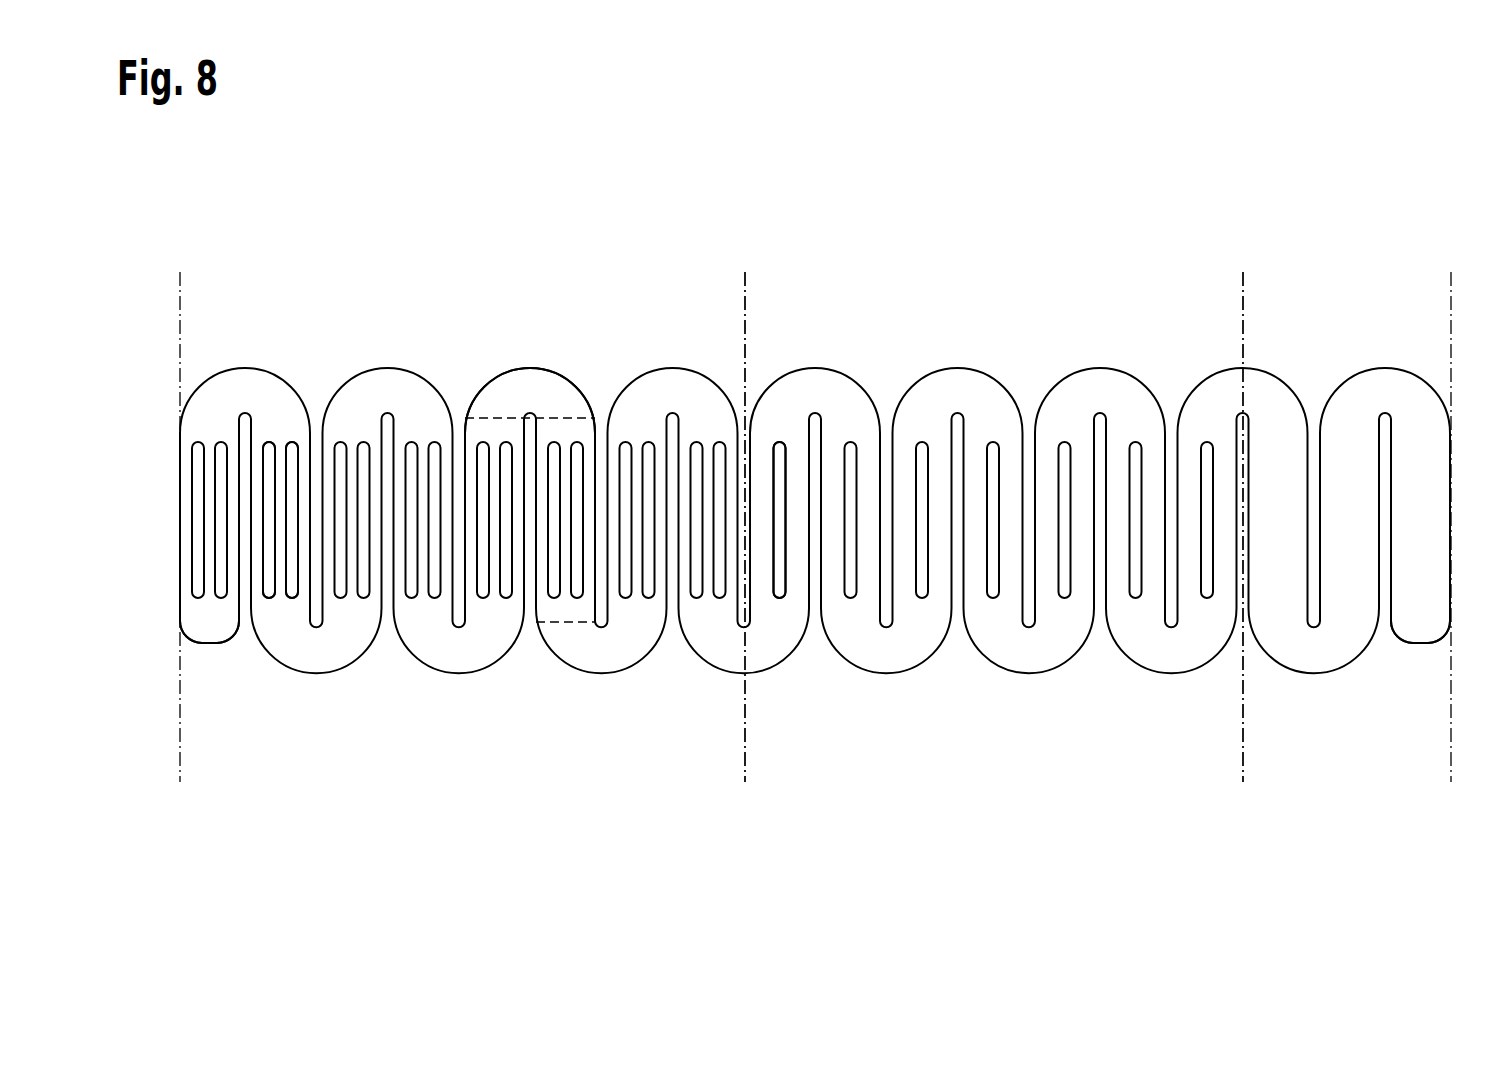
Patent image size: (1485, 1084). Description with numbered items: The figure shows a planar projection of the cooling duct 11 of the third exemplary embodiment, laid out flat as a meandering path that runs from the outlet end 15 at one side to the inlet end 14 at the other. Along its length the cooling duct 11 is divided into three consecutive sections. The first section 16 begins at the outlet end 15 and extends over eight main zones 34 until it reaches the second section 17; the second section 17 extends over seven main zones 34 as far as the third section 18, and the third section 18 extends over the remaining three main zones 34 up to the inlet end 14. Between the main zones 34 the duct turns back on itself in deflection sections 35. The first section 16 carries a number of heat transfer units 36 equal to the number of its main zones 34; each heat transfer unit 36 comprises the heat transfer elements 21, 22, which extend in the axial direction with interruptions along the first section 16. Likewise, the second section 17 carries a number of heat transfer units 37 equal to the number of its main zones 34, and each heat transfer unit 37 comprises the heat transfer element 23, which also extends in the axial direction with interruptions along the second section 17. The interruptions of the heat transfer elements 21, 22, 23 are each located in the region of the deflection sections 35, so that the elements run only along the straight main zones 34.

The cooling duct 11 is at (1126, 338).
The inlet end 14 is at (1413, 702).
The outlet end 15 is at (213, 702).
The first section 16 is at (460, 337).
The second section 17 is at (1012, 337).
The third section 18 is at (1332, 337).
The heat transfer element 21 is at (269, 600).
The heat transfer element 22 is at (290, 600).
The heat transfer element 23 is at (780, 600).
The main zone 34 is at (594, 437).
The deflection section 35 is at (542, 370).
The heat transfer unit 36 is at (278, 405).
The heat transfer unit 37 is at (784, 407).